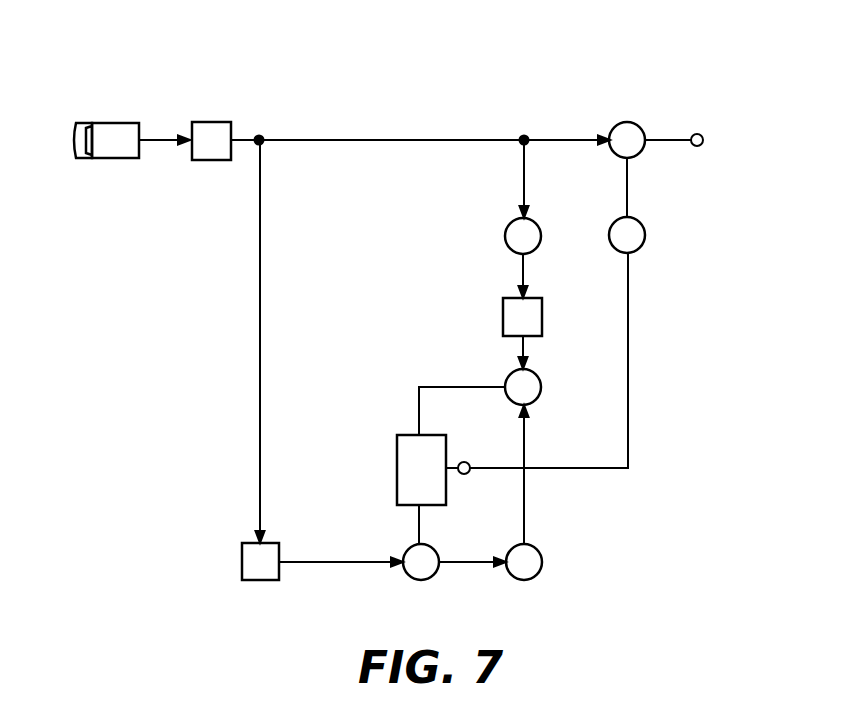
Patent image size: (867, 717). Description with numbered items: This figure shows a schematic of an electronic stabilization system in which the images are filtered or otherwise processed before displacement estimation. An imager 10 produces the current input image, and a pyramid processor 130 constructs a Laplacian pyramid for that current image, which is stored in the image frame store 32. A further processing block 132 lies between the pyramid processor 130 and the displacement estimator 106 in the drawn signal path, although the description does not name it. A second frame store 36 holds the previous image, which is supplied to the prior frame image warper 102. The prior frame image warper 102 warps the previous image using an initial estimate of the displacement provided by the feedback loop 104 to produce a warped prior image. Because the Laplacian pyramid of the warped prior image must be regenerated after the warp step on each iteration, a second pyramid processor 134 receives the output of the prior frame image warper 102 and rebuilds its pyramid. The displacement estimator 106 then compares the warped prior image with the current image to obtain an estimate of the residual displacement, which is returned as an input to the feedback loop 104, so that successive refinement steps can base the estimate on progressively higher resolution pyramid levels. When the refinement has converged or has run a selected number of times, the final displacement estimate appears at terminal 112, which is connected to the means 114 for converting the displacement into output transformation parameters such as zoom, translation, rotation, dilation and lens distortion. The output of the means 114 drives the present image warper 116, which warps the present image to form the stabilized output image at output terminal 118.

The imager 10 is at (100, 123).
The image frame store 32 is at (212, 122).
The second frame store 36 is at (242, 565).
The pyramid processor 130 is at (505, 230).
The processing block 132 is at (503, 310).
The displacement estimator 106 is at (508, 374).
The feedback loop 104 is at (397, 460).
The terminal 112 is at (468, 474).
The prior frame image warper 102 is at (424, 580).
The pyramid processor 134 is at (542, 565).
The present image warper 116 is at (630, 122).
The means for converting displacement to transformation parameters 114 is at (645, 237).
The output terminal 118 is at (703, 140).